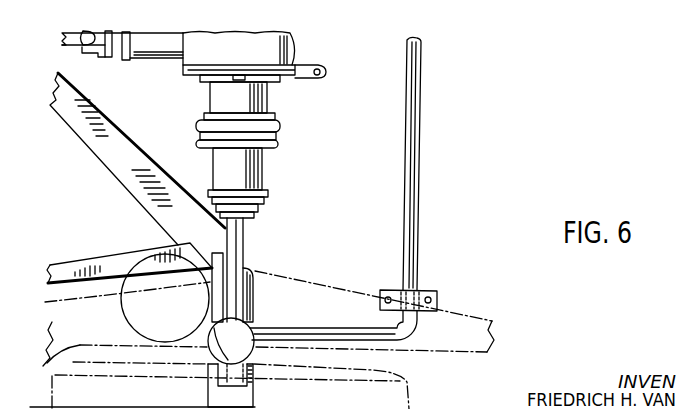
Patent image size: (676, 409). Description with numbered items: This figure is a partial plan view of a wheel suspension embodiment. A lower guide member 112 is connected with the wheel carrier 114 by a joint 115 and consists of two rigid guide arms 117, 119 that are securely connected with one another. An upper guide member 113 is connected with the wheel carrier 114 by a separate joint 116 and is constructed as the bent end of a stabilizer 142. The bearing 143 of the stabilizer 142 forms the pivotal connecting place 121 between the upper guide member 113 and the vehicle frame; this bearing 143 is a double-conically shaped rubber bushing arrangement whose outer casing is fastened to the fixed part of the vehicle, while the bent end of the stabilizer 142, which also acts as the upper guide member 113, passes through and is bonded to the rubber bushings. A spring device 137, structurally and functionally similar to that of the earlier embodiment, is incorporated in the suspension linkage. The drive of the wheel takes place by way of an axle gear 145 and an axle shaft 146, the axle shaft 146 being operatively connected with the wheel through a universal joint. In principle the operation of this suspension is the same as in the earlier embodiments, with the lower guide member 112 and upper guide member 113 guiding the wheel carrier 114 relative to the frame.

The lower guide member 112 is at (169, 125).
The upper guide member 113 is at (343, 326).
The wheel carrier 114 is at (207, 392).
The joint 115 is at (206, 325).
The joint 116 is at (254, 393).
The rigid guide arm 117 is at (121, 180).
The rigid guide arm 119 is at (110, 263).
The pivotal connecting place 121 is at (421, 290).
The spring device 137 is at (122, 307).
The stabilizer 142 is at (418, 184).
The bearing 143 is at (392, 290).
The axle gear 145 is at (267, 50).
The axle shaft 146 is at (236, 241).